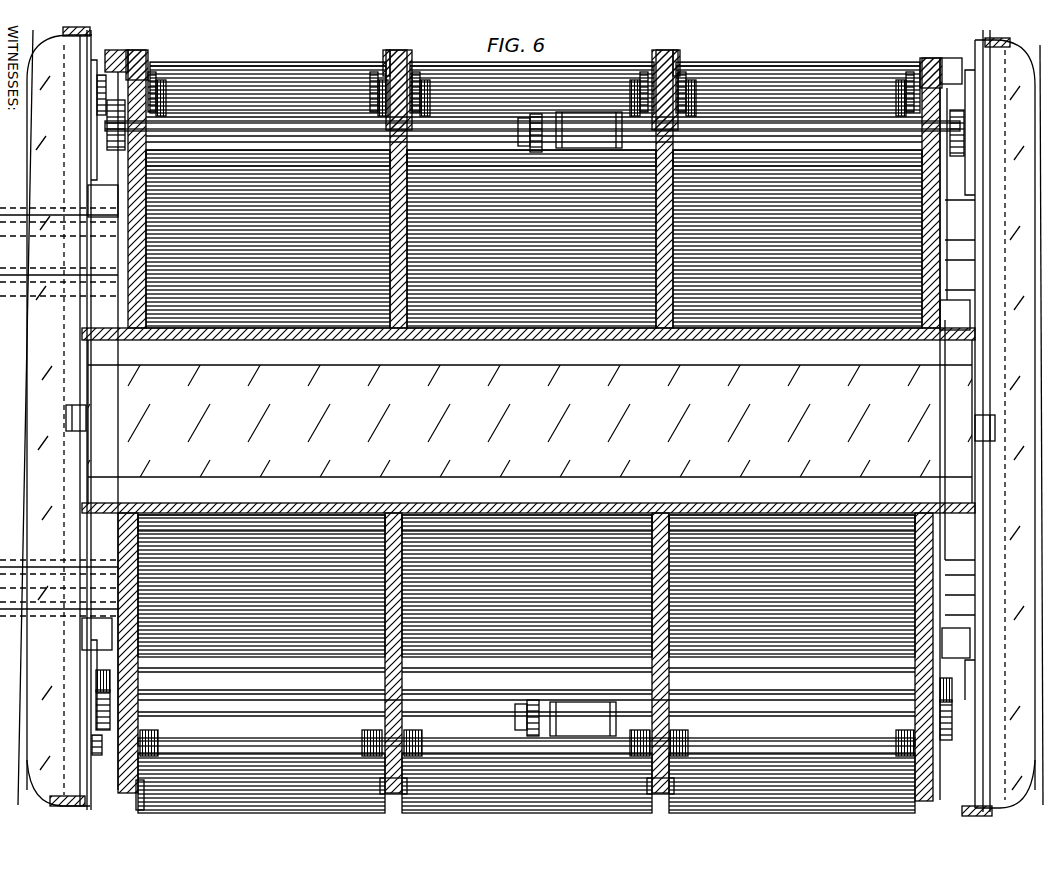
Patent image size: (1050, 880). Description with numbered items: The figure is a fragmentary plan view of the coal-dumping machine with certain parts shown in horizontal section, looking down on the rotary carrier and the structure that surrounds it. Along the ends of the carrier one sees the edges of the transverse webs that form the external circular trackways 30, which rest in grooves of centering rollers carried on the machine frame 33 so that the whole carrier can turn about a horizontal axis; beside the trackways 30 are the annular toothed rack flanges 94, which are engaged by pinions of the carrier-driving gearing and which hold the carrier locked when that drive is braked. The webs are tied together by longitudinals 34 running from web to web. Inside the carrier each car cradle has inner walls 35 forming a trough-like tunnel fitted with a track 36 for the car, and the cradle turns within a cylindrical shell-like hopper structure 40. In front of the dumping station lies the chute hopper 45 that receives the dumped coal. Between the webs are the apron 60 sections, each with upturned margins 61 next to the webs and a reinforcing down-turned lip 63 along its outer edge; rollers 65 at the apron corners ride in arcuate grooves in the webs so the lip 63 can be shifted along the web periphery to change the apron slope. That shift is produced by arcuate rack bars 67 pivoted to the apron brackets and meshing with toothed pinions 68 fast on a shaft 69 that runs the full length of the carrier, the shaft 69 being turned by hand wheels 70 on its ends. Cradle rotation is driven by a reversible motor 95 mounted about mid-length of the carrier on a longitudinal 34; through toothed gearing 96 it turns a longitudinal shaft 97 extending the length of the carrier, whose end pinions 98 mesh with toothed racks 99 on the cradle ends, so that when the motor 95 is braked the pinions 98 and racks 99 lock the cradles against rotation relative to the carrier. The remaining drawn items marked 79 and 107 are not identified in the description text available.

The external circular trackway 30 is at (136, 50).
The machine frame 33 is at (975, 432).
The longitudinal 34 is at (270, 135).
The inner wall 35 is at (97, 180).
The track 36 is at (526, 421).
The shell-like hopper structure 40 is at (118, 255).
The chute hopper 45 is at (150, 800).
The apron 60 is at (288, 300).
The upturned margin 61 is at (246, 300).
The down-turned lip 63 is at (312, 62).
The roller 65 is at (148, 60).
The arcuate rack bar 67 is at (156, 75).
The toothed pinion 68 is at (168, 85).
The shaft 69 is at (320, 745).
The hand wheel 70 is at (97, 96).
The frame bar 79 is at (134, 340).
The annular toothed rack flange 94 is at (112, 48).
The reversible motor 95 is at (620, 144).
The toothed gearing 96 is at (518, 147).
The longitudinal shaft 97 is at (462, 133).
The toothed pinion 98 is at (107, 140).
The toothed rack 99 is at (96, 678).
The glass plate 107 is at (512, 432).